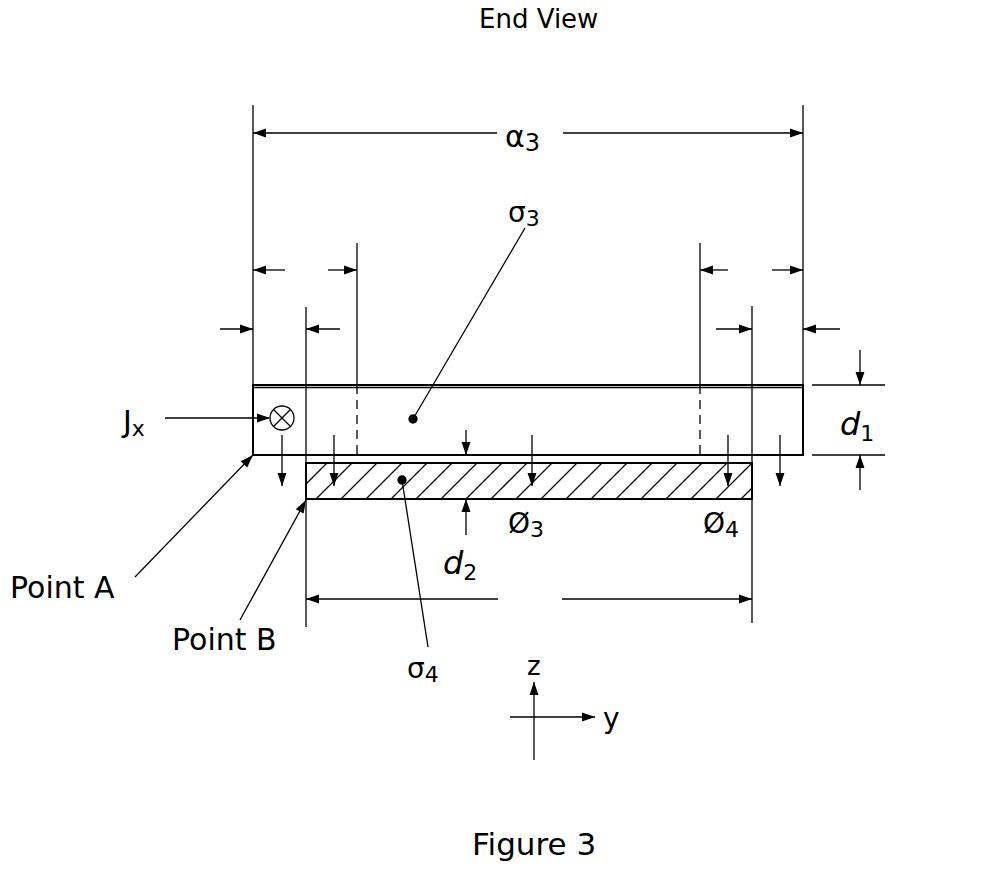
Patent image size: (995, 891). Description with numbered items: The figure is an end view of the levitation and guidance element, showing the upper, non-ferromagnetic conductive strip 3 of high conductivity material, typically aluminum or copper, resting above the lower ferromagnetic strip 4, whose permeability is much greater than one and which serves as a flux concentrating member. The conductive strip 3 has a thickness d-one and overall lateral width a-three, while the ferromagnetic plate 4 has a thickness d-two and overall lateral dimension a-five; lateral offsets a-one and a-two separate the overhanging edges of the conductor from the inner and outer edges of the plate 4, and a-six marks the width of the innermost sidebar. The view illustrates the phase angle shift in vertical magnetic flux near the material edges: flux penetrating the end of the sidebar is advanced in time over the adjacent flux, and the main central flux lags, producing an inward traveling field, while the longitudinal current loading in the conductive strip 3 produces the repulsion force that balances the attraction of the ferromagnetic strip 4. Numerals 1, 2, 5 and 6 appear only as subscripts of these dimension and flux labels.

The lateral oriented rungs or main path conductors 3 is at (562, 419).
The ferromagnetic secondary circuit material 4 is at (626, 480).
The dimension alpha1 / flux phi1 1 is at (280, 423).
The dimension alpha2 / flux phi2 2 is at (582, 428).
The dimension alpha5 / flux phi5 5 is at (557, 528).
The dimension alpha6 6 is at (528, 256).